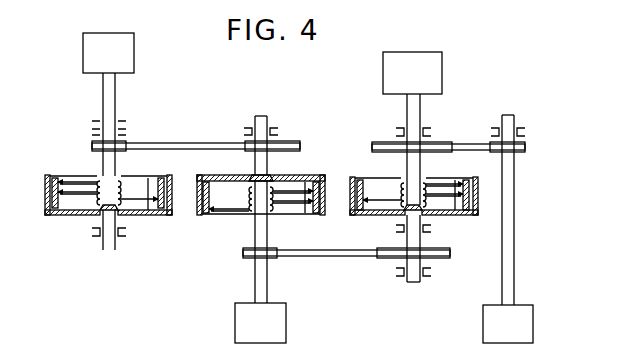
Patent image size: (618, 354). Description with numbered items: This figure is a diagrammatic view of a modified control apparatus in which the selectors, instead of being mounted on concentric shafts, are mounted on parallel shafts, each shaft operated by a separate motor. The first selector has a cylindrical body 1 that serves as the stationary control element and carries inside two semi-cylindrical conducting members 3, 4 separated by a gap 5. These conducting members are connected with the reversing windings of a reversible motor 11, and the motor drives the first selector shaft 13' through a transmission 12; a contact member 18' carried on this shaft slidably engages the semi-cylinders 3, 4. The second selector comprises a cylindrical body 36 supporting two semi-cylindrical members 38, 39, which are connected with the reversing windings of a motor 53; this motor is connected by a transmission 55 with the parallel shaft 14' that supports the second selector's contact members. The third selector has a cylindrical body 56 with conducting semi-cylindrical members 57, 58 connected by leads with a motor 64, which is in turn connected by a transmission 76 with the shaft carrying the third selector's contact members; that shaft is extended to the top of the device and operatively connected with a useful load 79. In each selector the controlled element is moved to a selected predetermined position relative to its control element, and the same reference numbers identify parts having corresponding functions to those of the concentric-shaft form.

The cylindrical body 1 is at (46, 201).
The semi-cylindrical conducting member 3 is at (64, 177).
The semi-cylindrical conducting member 4 is at (152, 178).
The gap 5 is at (152, 216).
The reversible motor 11 is at (135, 53).
The transmission 12 is at (177, 140).
The shaft 13' is at (106, 245).
The shaft 14' is at (236, 209).
The contact member 18' is at (404, 257).
The cylindrical body 36 is at (203, 216).
The semi-cylindrical member 38 is at (232, 216).
The semi-cylindrical member 39 is at (313, 216).
The motor 53 is at (287, 326).
The transmission 55 is at (338, 256).
The cylindrical body 56 is at (352, 186).
The semi-cylindrical member 57 is at (380, 172).
The semi-cylindrical member 58 is at (463, 179).
The motor 64 is at (534, 326).
The transmission 76 is at (463, 139).
The useful load 79 is at (443, 72).